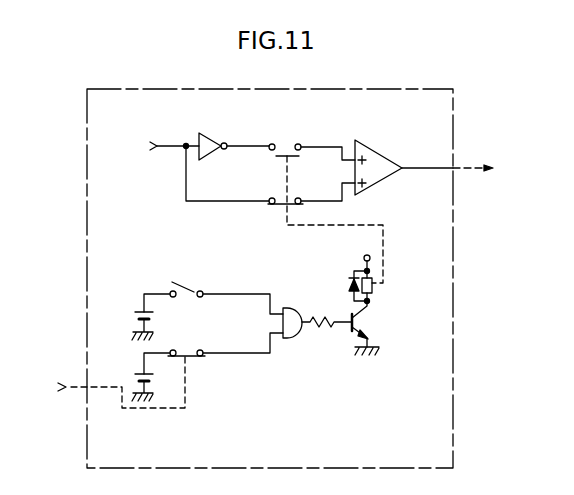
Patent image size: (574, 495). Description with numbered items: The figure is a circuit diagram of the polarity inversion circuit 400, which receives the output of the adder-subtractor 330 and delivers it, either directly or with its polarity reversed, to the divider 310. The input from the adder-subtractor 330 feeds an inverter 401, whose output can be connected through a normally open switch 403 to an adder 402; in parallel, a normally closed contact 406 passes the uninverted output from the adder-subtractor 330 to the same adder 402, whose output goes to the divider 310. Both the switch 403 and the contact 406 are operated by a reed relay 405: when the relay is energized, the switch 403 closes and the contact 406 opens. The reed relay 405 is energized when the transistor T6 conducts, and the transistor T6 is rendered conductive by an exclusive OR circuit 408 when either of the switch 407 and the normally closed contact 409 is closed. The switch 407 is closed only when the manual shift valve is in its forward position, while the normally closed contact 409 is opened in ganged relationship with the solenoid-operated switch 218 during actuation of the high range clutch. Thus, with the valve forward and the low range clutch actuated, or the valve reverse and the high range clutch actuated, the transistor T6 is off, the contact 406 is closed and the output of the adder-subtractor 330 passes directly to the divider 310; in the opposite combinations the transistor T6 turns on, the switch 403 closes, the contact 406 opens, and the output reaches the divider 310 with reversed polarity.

The polarity inversion circuit 400 is at (425, 89).
The inverter 401 is at (211, 142).
The adder 402 is at (385, 162).
The normally open switch 403 is at (276, 157).
The reed relay 405 is at (376, 282).
The normally closed contact 406 is at (283, 207).
The switch 407 is at (188, 290).
The exclusive OR circuit 408 is at (297, 312).
The normally closed contact 409 is at (198, 360).
The transistor T6 is at (346, 327).
The adder-subtractor 330 is at (180, 162).
The divider 310 is at (506, 169).
The solenoid-operated switch 218 is at (102, 382).